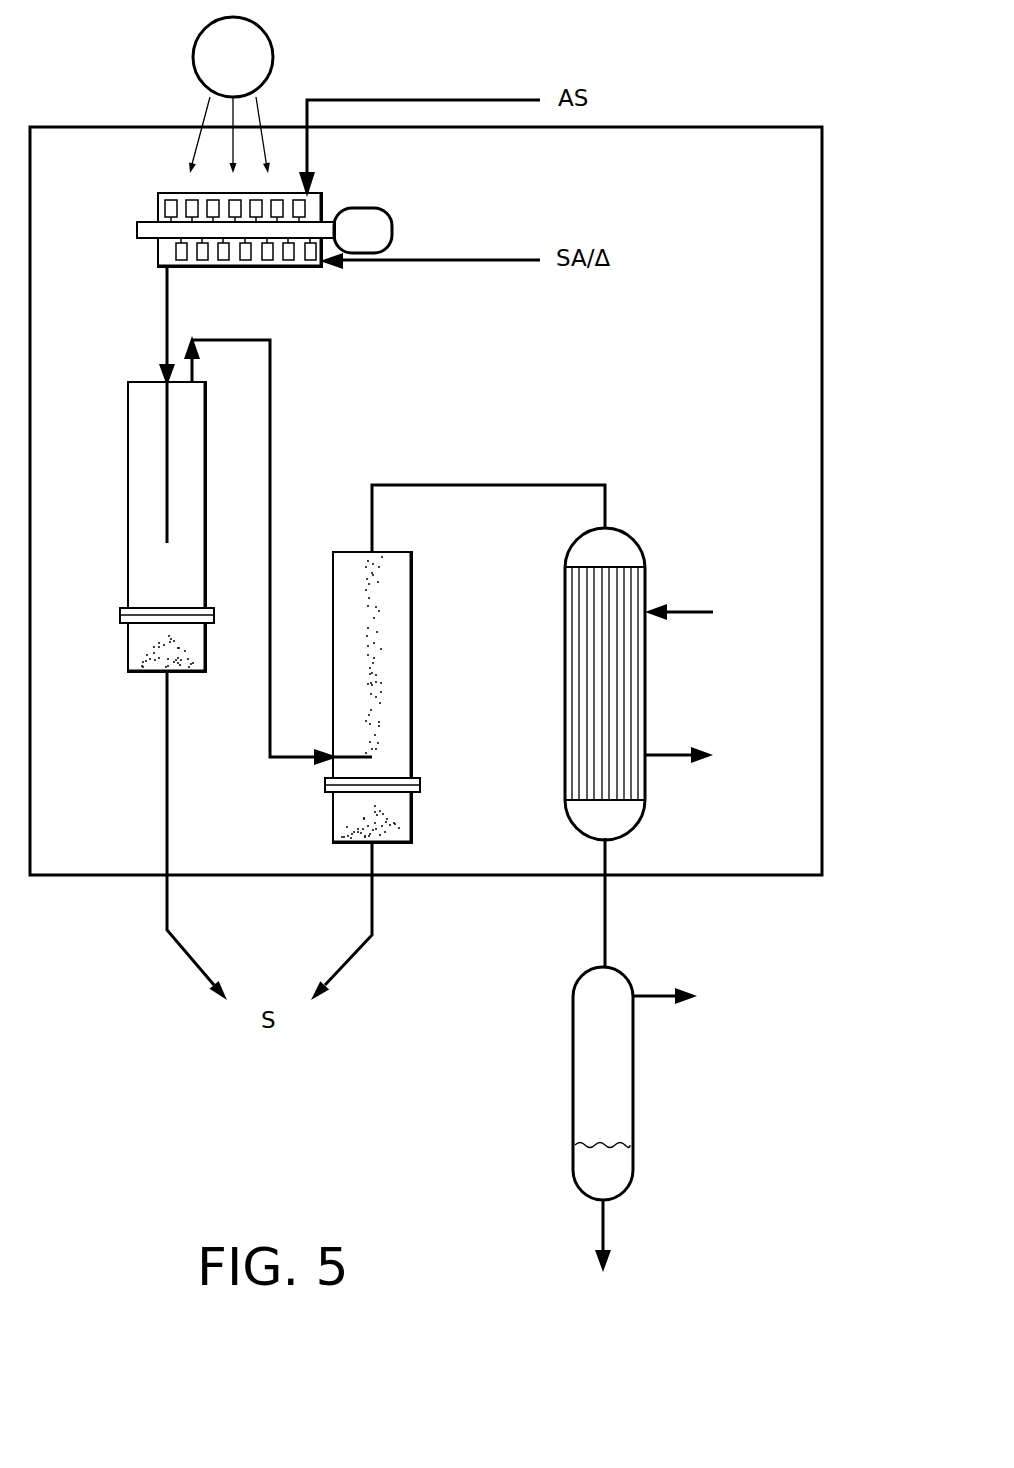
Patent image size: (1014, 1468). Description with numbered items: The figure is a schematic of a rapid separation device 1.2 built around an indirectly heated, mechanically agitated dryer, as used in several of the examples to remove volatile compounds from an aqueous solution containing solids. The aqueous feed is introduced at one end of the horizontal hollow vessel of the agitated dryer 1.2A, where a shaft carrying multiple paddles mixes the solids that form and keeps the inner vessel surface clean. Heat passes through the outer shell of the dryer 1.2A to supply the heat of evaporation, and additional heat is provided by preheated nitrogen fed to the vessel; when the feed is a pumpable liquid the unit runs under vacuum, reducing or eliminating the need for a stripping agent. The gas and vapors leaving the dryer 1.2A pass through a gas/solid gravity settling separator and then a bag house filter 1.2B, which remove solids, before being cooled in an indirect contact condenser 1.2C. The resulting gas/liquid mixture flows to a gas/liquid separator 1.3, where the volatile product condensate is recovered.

The rapid separation device 1.2 is at (822, 321).
The mechanically agitated dryer 1.2A is at (283, 267).
The bag house filter 1.2B is at (412, 605).
The indirect contact condenser 1.2C is at (630, 533).
The gas/liquid separator 1.3 is at (574, 1061).